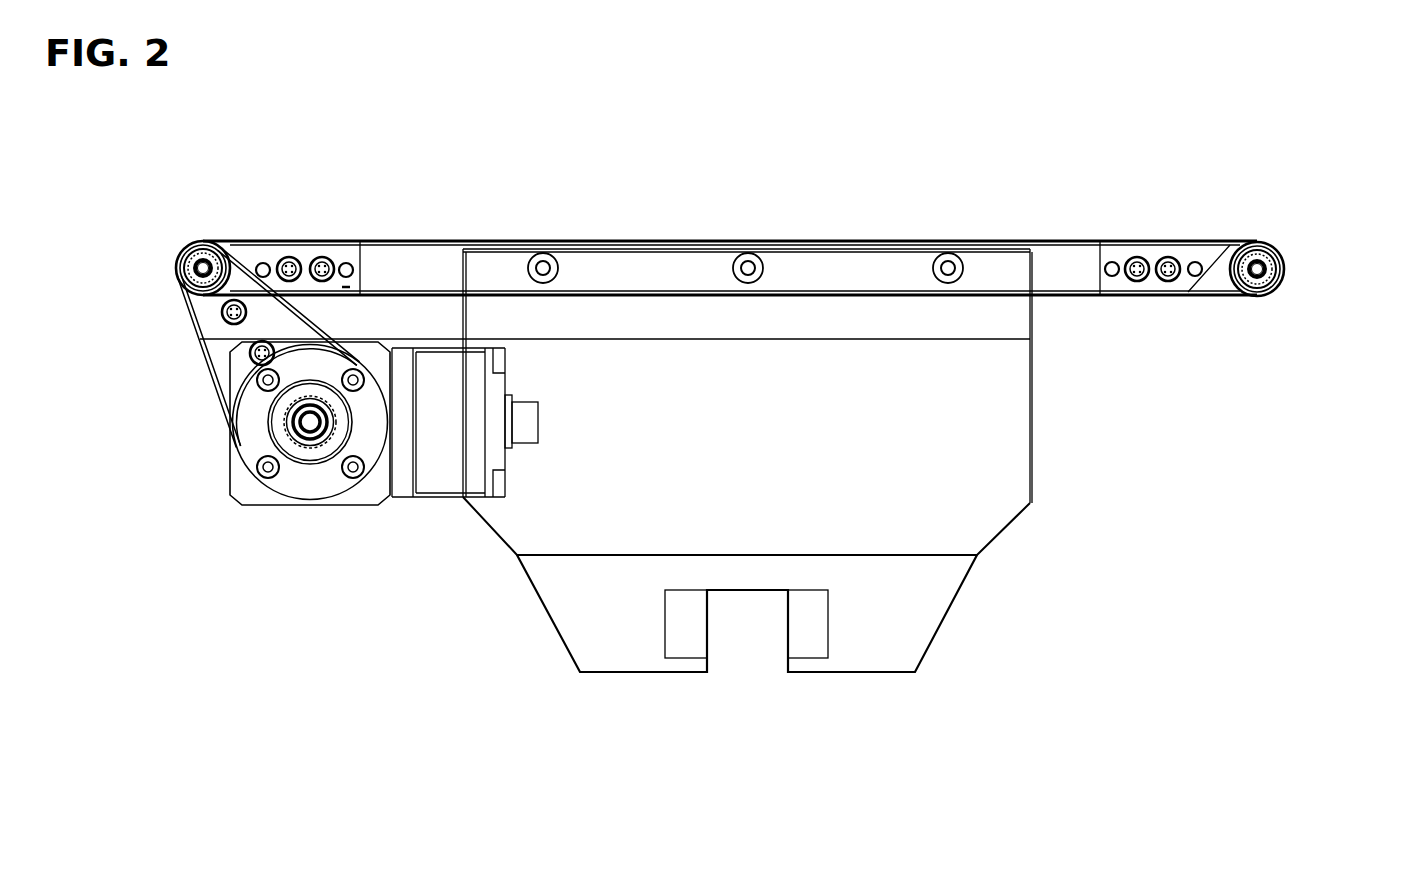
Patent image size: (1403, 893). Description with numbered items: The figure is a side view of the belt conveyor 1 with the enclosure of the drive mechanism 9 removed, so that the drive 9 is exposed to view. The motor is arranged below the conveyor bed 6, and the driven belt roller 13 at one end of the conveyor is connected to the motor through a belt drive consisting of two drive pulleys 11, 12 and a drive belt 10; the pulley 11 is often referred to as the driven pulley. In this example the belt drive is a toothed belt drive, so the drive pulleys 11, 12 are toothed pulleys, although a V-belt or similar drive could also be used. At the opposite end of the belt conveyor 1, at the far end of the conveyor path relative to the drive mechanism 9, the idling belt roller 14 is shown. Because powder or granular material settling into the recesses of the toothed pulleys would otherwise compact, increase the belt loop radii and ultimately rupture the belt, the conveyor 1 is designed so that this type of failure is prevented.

The belt conveyor 1 is at (1298, 176).
The conveyor bed 6 is at (1080, 273).
The drive mechanism 9 is at (277, 530).
The drive belt 10 is at (203, 339).
The drive pulley 11 is at (184, 288).
The drive pulley 12 is at (325, 468).
The driven belt roller 13 is at (166, 239).
The idling belt roller 14 is at (1294, 251).